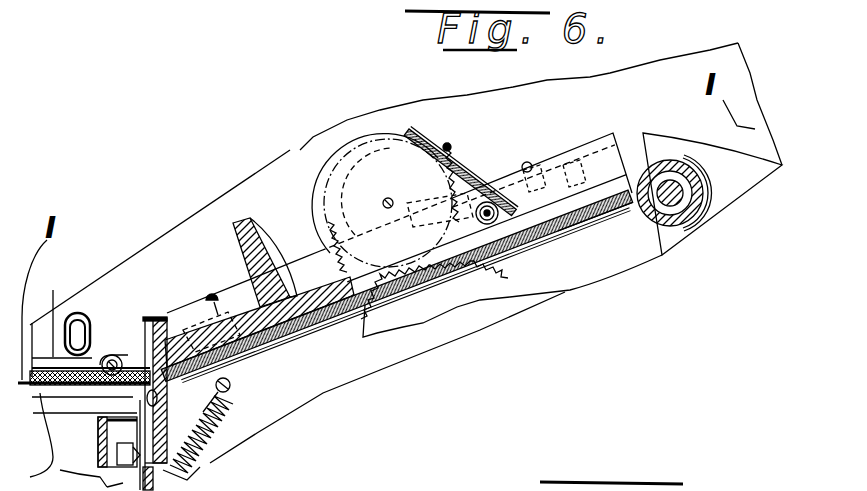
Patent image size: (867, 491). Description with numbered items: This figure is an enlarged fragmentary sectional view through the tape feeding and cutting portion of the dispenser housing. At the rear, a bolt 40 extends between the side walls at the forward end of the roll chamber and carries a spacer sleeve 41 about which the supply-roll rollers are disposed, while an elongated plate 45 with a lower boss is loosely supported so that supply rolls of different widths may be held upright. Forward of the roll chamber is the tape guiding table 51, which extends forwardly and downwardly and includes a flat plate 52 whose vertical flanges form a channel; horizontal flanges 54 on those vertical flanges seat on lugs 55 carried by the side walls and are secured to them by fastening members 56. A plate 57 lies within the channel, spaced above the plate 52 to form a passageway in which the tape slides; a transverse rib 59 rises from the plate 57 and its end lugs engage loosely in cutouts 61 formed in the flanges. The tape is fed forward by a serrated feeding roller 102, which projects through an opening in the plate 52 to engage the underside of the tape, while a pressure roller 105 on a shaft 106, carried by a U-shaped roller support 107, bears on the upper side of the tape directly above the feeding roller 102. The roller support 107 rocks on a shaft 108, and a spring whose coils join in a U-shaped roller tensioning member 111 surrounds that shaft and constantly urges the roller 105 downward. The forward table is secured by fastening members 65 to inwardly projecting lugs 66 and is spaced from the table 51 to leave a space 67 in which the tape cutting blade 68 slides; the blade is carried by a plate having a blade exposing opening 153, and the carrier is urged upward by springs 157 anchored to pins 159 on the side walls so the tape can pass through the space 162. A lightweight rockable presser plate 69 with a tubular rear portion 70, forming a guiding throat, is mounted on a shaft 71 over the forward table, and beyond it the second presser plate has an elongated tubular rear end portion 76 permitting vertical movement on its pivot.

The bolt 40 is at (676, 230).
The spacer sleeve 41 is at (712, 194).
The plate 45 is at (747, 153).
The tape guiding table 51 is at (603, 212).
The flat plate 52 is at (557, 230).
The horizontal flange 54 is at (573, 192).
The lug 55 is at (617, 102).
The fastening member 56 is at (521, 163).
The plate 57 is at (232, 343).
The rib 59 is at (252, 222).
The cutout or recess 61 is at (300, 272).
The fastening member 65 is at (106, 356).
The inwardly projecting lug 66 is at (80, 393).
The space 67 is at (173, 405).
The tape cutting blade 68 is at (122, 357).
The rockable presser plate 69 is at (53, 320).
The tubular rear portion 70 is at (111, 347).
The bolt or shaft 71 is at (147, 318).
The tubular rear end portion 76 is at (78, 313).
The serrated feeding roller 102 is at (421, 320).
The pressure roller 105 is at (363, 158).
The shaft 106 is at (391, 200).
The U-shaped roller support 107 is at (447, 147).
The shaft 108 is at (503, 247).
The U-shaped roller tensioning member 111 is at (450, 143).
The blade exposing opening 153 is at (165, 320).
The spring 157 is at (230, 410).
The bolt or pin 159 is at (238, 376).
The space 162 is at (196, 466).